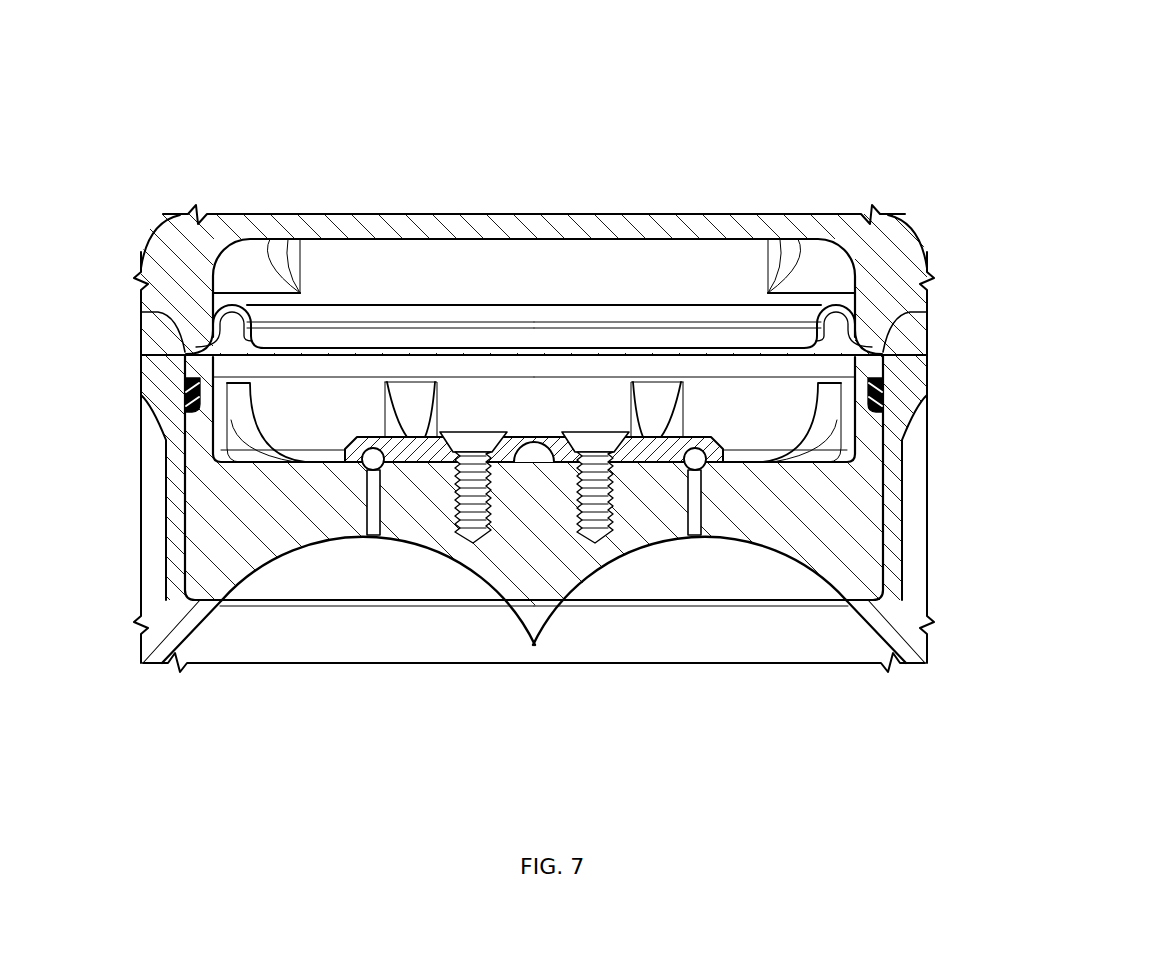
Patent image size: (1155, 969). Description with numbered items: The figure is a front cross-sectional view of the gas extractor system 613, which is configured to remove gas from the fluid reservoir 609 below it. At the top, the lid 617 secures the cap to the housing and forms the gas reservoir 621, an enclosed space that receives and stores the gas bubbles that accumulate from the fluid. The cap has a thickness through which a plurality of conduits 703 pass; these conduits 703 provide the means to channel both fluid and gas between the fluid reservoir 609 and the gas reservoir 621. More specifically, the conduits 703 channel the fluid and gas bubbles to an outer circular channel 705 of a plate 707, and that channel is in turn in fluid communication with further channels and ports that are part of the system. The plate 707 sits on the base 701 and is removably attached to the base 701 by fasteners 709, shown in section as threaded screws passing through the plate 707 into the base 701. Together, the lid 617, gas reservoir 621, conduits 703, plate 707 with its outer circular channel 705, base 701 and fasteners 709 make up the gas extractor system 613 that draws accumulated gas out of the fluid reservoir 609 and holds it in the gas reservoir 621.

The gas extractor system 613 is at (577, 367).
The lid 617 is at (375, 212).
The gas reservoir 621 is at (825, 277).
The fluid reservoir 609 is at (703, 643).
The base 701 is at (160, 435).
The conduits 703 is at (345, 540).
The outer circular channel 705 is at (352, 440).
The plate 707 is at (712, 440).
The fasteners 709 is at (473, 432).